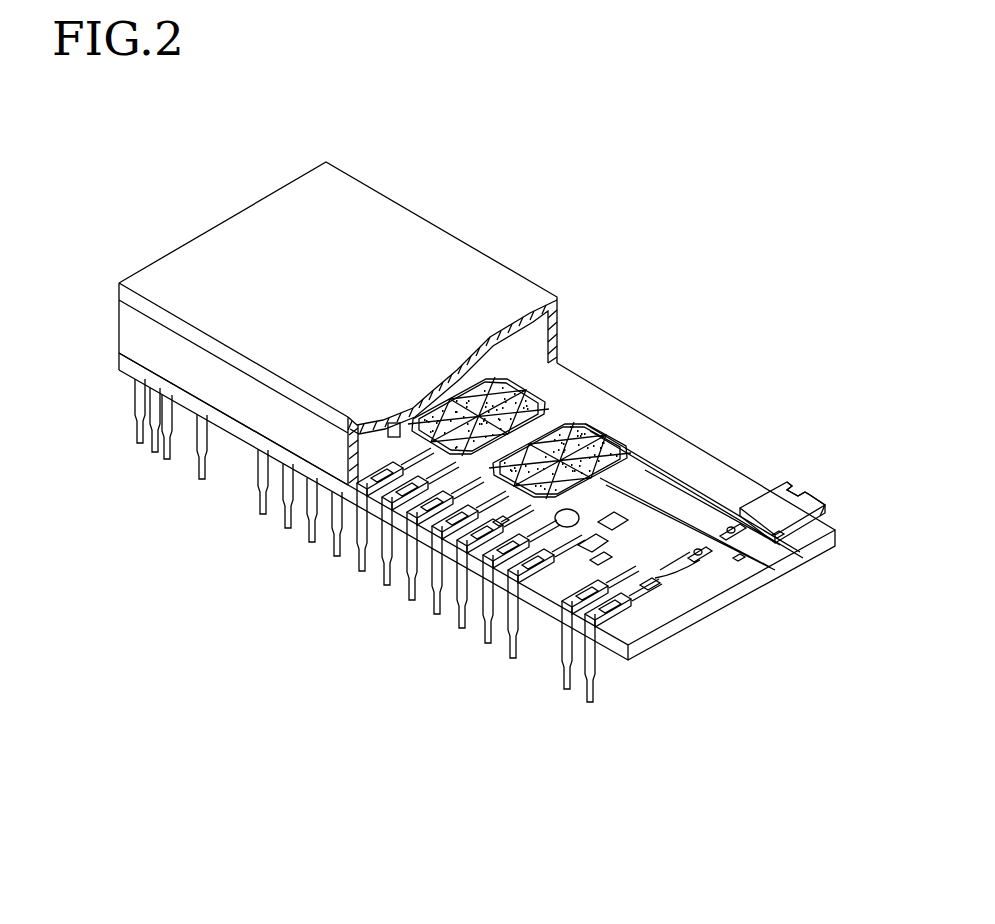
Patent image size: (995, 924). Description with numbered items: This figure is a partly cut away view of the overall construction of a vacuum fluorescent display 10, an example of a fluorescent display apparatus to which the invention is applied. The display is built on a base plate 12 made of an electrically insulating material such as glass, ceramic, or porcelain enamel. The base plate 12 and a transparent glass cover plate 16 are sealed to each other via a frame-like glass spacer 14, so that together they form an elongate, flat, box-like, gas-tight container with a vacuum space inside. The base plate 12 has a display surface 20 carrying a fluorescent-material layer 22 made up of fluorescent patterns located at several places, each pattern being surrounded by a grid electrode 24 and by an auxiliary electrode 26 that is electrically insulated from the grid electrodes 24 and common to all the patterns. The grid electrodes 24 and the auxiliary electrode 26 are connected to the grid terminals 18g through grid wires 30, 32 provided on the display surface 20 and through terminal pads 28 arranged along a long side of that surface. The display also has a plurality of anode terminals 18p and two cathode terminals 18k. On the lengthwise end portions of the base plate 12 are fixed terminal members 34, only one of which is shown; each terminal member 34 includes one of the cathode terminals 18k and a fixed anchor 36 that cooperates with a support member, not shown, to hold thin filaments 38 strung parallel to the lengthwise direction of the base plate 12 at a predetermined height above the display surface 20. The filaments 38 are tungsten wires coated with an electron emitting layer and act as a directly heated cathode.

The vacuum fluorescent display 10 is at (643, 252).
The base plate 12 is at (757, 583).
The glass spacer 14 is at (253, 413).
The glass cover plate 16 is at (450, 272).
The grid terminals 18g is at (262, 503).
The cathode terminals 18k is at (143, 438).
The anode terminals 18p is at (362, 562).
The display surface 20 is at (757, 510).
The fluorescent-material layer 22 is at (613, 440).
The grid electrode 24 is at (594, 417).
The auxiliary electrode 26 is at (553, 400).
The terminal pads 28 is at (572, 560).
The grid wire 30 is at (391, 423).
The grid wire 32 is at (497, 527).
The terminal member 34 is at (808, 523).
The fixed anchor 36 is at (692, 596).
The thin filaments 38 is at (710, 495).